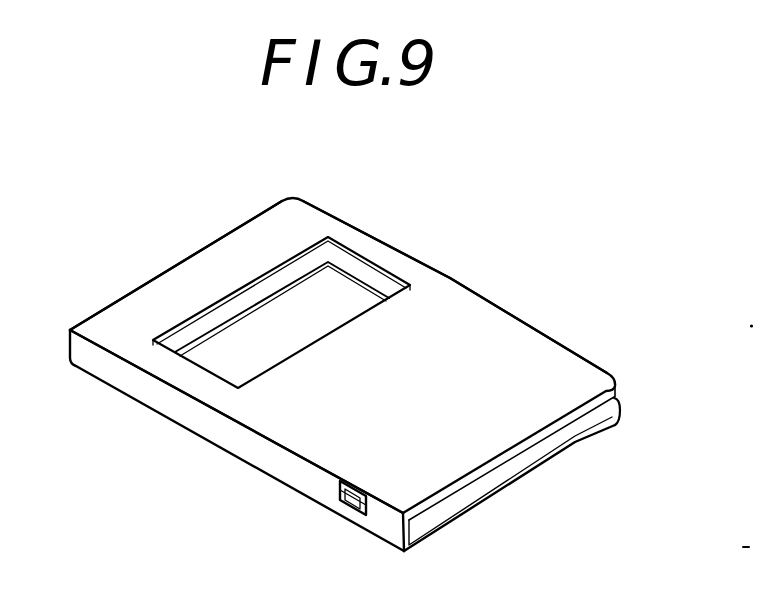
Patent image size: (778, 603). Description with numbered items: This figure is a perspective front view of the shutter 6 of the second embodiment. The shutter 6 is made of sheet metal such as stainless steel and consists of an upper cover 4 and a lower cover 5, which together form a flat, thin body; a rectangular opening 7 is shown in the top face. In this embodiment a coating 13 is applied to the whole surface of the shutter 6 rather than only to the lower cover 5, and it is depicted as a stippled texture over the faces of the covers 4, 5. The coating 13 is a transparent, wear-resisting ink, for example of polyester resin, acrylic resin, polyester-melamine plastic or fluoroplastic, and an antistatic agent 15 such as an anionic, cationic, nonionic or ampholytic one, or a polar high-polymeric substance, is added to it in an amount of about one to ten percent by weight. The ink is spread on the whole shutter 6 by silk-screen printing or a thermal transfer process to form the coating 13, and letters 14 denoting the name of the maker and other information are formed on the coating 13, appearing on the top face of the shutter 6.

The upper cover 4 is at (593, 366).
The lower cover 5 is at (588, 437).
The shutter 6 is at (529, 318).
The head access window 7 is at (228, 290).
The coating 13 is at (463, 317).
The letters 14 is at (463, 458).
The antistatic agent 15 is at (252, 417).